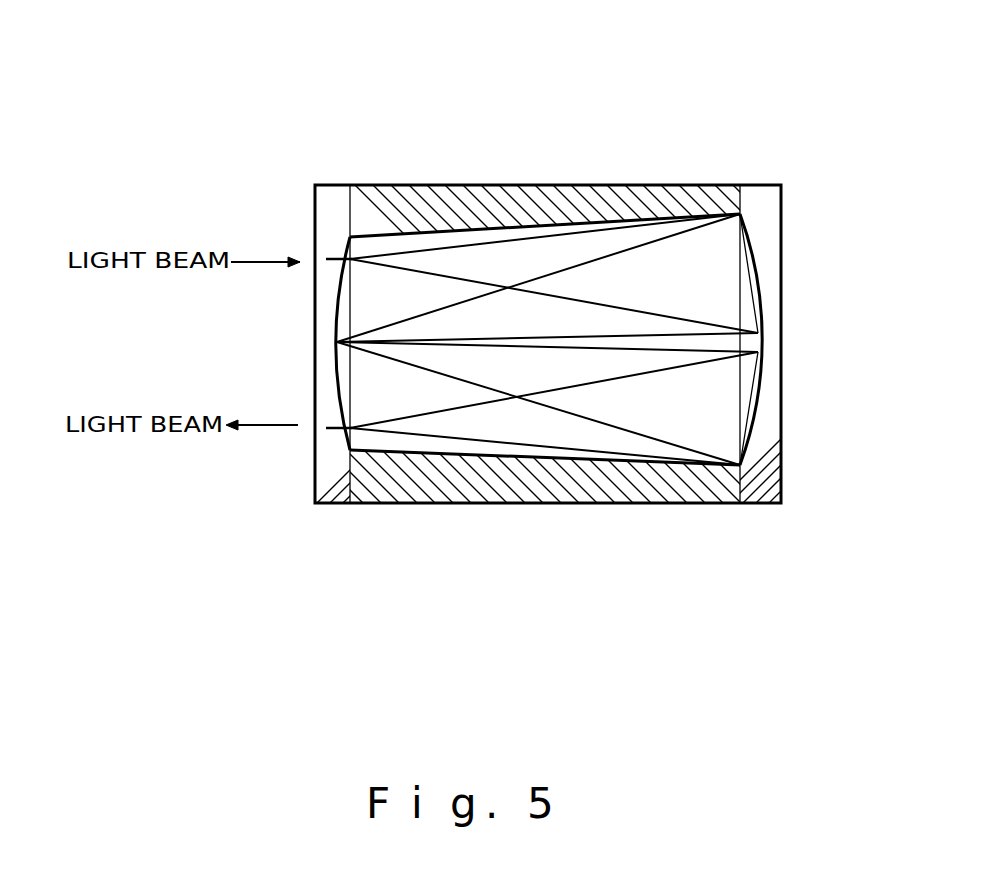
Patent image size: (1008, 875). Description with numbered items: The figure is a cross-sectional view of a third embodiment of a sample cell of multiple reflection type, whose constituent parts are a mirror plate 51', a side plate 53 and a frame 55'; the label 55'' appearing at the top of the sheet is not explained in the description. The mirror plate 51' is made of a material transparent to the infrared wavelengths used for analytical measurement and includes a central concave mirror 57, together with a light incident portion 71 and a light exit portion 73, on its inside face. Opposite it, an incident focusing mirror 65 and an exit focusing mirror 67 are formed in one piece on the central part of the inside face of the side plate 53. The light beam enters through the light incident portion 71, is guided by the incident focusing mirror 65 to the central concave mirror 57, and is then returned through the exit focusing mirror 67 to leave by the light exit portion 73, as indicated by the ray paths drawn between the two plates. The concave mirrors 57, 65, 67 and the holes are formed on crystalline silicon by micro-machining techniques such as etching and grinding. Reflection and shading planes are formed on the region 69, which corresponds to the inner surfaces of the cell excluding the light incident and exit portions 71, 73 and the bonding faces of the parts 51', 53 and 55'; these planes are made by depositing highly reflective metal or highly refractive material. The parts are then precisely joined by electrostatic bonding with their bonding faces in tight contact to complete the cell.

The mirror plate 51' is at (500, 474).
The side plate 53 is at (762, 185).
The frame 55' is at (578, 169).
The multipass optical cell 55'' is at (547, 234).
The central concave mirror 57 is at (316, 364).
The incident focusing mirror 65 is at (780, 239).
The exit focusing mirror 67 is at (762, 424).
The region of reflection and shading planes 69 is at (550, 463).
The light incident portion 71 is at (332, 256).
The light exit portion 73 is at (342, 428).